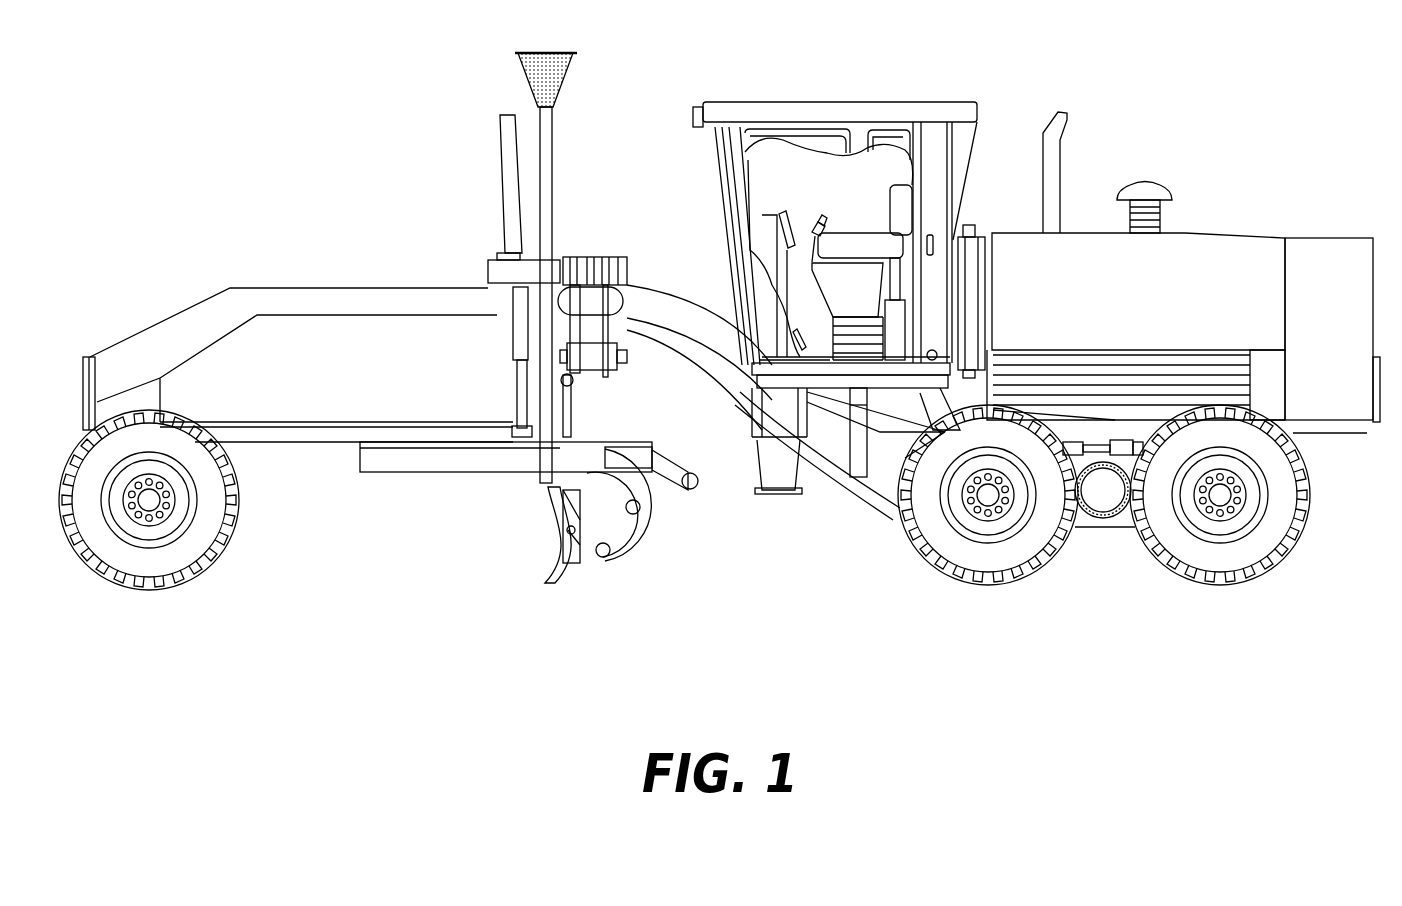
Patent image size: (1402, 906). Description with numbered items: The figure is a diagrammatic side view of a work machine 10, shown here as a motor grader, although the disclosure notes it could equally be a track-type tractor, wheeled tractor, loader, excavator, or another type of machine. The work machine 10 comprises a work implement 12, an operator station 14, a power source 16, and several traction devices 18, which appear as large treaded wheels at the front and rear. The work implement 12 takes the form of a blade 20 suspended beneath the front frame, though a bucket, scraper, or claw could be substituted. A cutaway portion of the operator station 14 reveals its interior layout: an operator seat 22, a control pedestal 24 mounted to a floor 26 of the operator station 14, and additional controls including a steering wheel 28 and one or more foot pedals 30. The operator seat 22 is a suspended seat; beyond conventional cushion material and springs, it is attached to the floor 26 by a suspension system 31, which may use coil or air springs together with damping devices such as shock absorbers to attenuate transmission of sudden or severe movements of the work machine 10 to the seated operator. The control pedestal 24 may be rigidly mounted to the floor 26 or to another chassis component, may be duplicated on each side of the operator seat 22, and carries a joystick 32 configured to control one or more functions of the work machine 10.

The work machine 10 is at (1186, 117).
The work implement 12 is at (397, 568).
The operator station 14 is at (843, 178).
The power source 16 is at (1237, 319).
The traction devices 18 is at (165, 557).
The blade 20 is at (546, 540).
The operator seat 22 is at (903, 190).
The control pedestal 24 is at (811, 250).
The floor 26 is at (818, 358).
The steering wheel 28 is at (787, 222).
The foot pedals 30 is at (798, 343).
The suspension system 31 is at (860, 323).
The joystick 32 is at (822, 228).